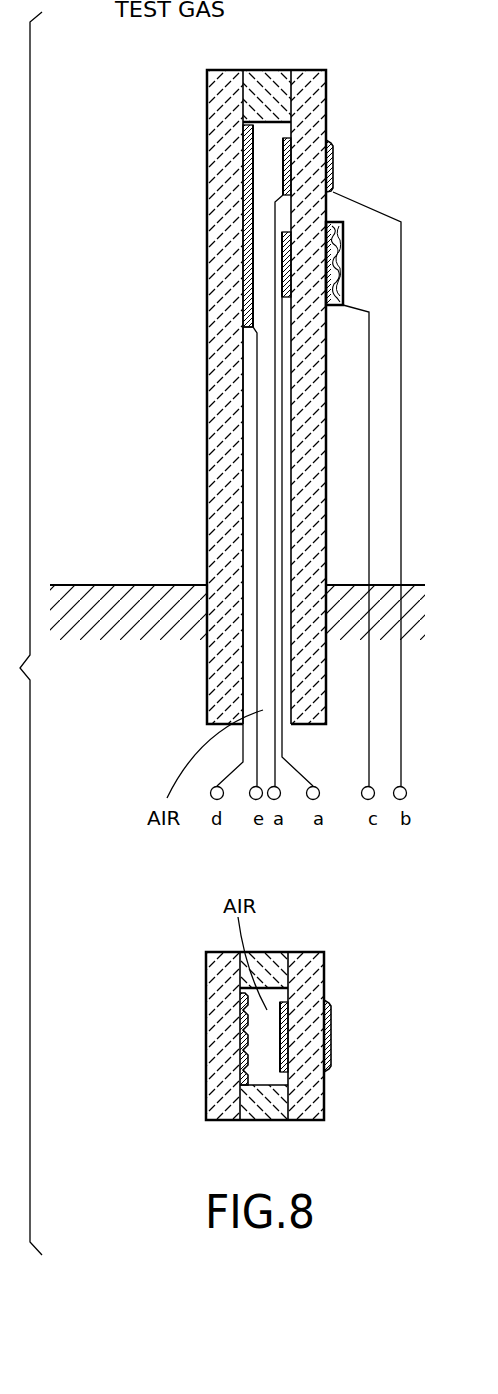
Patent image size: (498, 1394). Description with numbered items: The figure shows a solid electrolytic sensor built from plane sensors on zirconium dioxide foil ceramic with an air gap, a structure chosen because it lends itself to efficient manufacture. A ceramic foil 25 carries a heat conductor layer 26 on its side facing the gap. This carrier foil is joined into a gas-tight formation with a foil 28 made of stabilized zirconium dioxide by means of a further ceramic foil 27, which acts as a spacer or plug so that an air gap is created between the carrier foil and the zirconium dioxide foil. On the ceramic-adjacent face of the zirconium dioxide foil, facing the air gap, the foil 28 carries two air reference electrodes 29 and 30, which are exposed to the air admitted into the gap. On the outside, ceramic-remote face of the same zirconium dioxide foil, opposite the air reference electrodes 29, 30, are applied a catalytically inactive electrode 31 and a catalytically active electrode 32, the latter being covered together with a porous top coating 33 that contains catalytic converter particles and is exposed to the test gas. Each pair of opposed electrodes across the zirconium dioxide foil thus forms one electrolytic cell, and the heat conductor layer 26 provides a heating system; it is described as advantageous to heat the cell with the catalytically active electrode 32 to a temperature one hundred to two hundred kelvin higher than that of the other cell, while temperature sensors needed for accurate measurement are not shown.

The ceramic foil 25 is at (215, 98).
The heat conductor layer 26 is at (248, 307).
The ceramic foil 27 is at (266, 84).
The foil made of stabilized zirconium dioxide 28 is at (328, 98).
The air reference electrode 29 is at (285, 178).
The air reference electrode 30 is at (287, 262).
The catalytically inactive electrode 31 is at (333, 146).
The catalytically active electrode 32 is at (332, 257).
The porous top coating 33 is at (343, 275).